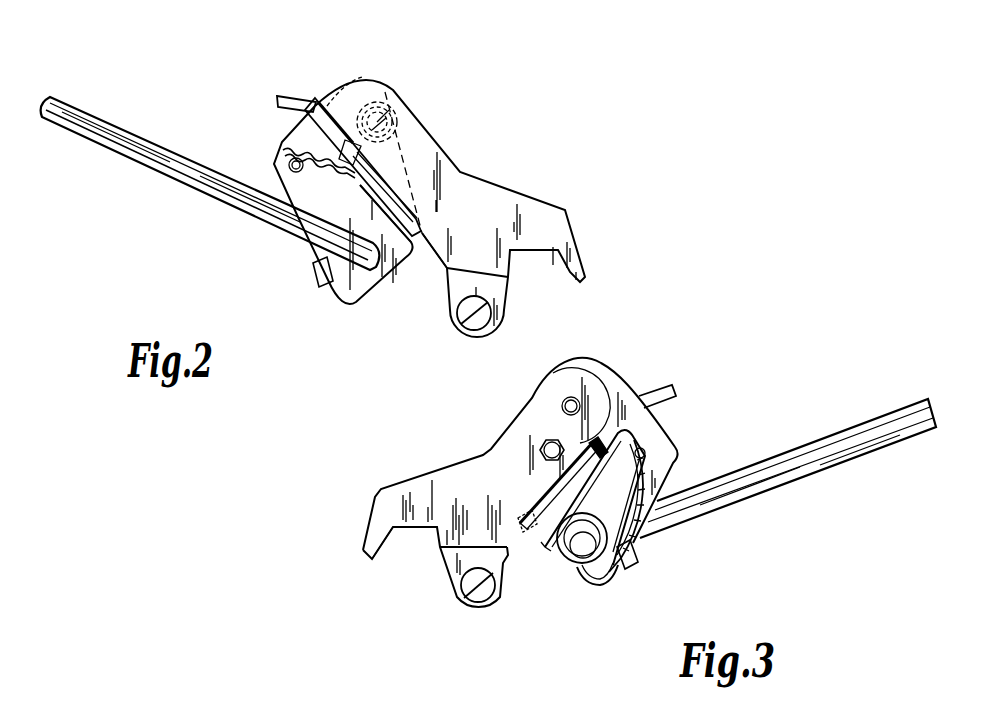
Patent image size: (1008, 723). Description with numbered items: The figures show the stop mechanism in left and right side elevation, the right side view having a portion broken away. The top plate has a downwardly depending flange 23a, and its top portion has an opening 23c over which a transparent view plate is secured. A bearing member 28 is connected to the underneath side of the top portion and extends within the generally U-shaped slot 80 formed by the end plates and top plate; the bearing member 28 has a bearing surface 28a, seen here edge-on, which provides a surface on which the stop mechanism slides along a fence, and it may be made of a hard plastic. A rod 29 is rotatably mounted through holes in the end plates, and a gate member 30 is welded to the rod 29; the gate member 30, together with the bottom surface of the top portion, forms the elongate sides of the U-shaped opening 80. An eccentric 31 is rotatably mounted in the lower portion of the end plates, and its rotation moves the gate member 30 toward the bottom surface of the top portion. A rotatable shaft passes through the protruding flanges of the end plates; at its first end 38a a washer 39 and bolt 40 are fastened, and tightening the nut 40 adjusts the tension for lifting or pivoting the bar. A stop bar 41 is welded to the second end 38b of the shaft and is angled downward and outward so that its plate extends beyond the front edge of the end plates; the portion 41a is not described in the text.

In FIG. 2, the downwardly depending flange 23a is at (316, 100).
In FIG. 3, the downwardly depending flange 23a is at (788, 468).
In FIG. 2, the opening 23c is at (381, 190).
In FIG. 2, the bearing member 28 is at (307, 119).
In FIG. 2, the bearing surface 28a is at (352, 158).
In FIG. 2, the rod 29 is at (290, 163).
In FIG. 3, the gate member 30 is at (580, 503).
In FIG. 3, the eccentric 31 is at (578, 591).
In FIG. 2, the first end of rotatable shaft 38a is at (404, 115).
In FIG. 3, the second end of rotatable shaft 38b is at (573, 405).
In FIG. 2, the washer 39 is at (390, 84).
In FIG. 2, the bolt 40 is at (388, 133).
In FIG. 3, the stop bar 41 is at (497, 468).
In FIG. 3, the foot 41a is at (412, 528).
In FIG. 2, the U-shaped slot 80 is at (422, 254).
In FIG. 3, the U-shaped slot 80 is at (541, 527).